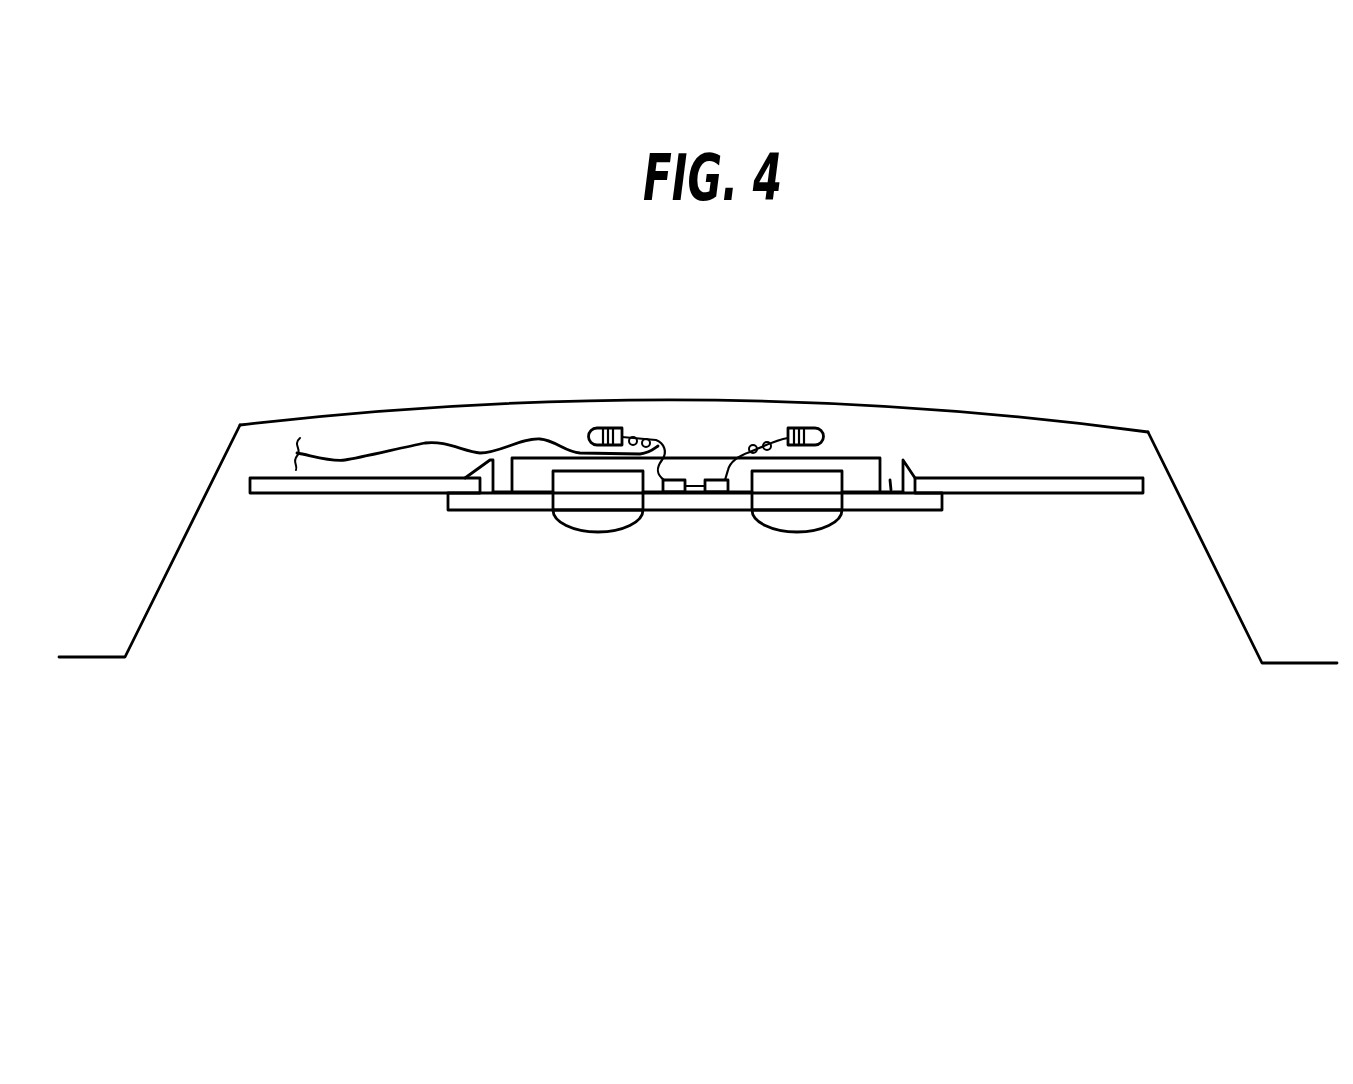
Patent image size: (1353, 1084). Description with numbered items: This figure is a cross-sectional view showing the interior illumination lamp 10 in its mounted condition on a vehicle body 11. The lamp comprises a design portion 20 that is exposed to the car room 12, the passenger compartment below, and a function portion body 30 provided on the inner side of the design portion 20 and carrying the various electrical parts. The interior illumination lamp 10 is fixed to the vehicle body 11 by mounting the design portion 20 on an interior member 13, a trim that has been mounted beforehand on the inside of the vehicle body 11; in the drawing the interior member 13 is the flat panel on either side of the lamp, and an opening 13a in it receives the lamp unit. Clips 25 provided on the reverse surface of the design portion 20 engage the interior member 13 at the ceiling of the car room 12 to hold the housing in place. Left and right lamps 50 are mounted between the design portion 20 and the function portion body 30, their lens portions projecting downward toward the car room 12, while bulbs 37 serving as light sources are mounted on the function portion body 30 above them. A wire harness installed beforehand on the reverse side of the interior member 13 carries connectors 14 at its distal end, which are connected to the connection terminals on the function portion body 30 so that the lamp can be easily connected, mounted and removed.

The interior illumination lamp 10 is at (553, 553).
The vehicle body 11 is at (1052, 419).
The car room 12 is at (723, 624).
The interior member 13 is at (1115, 495).
The opening in roof trim 13a is at (905, 512).
The connectors 14 is at (685, 478).
The design portion 20 is at (875, 514).
The clips 25 is at (483, 457).
The function portion body 30 is at (867, 454).
The bulbs 37 is at (594, 427).
The lamp 50 is at (633, 534).